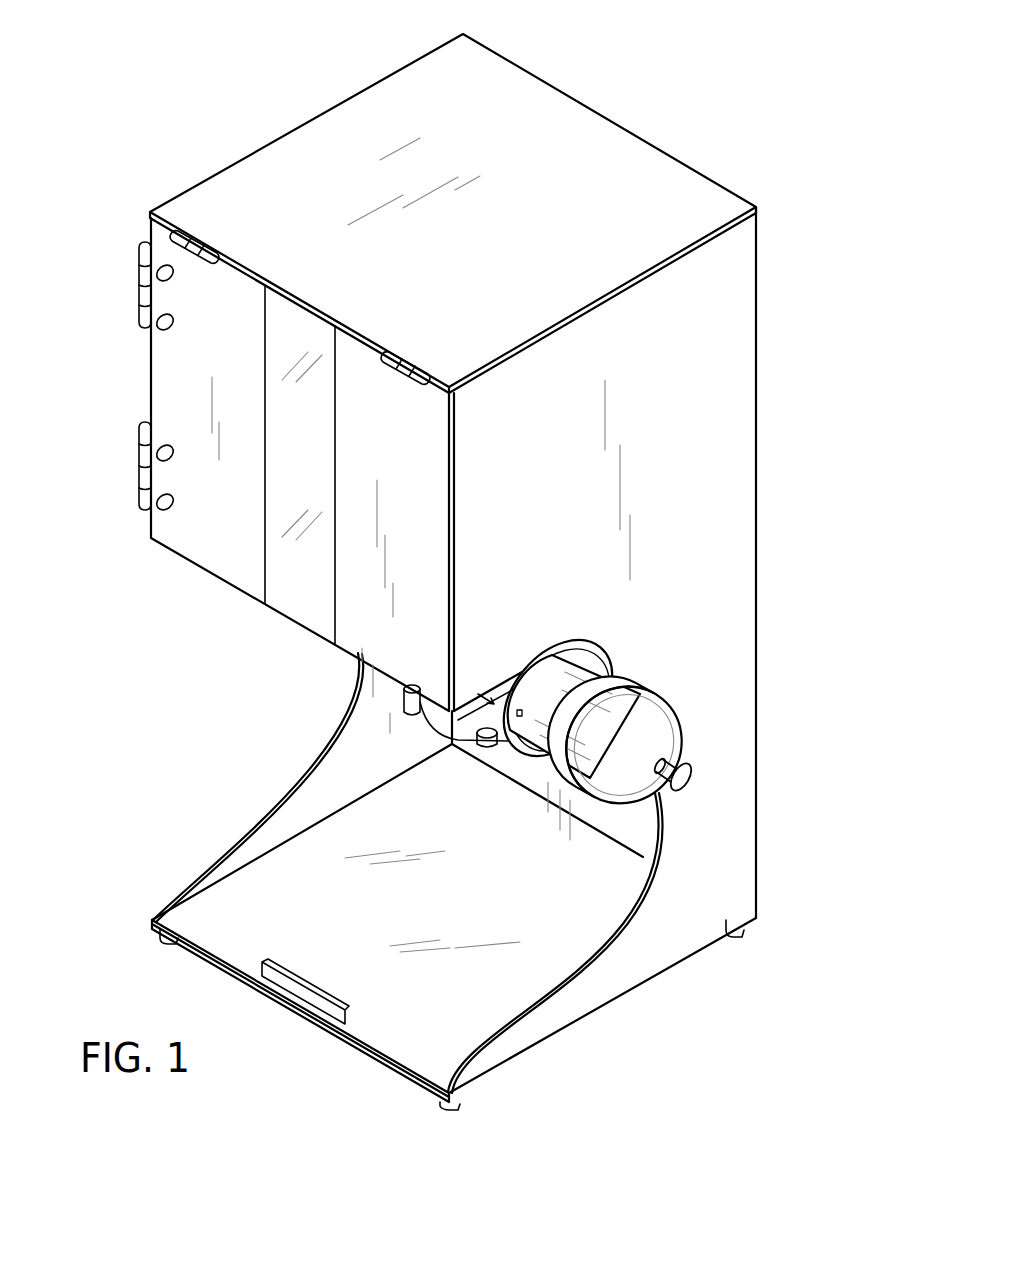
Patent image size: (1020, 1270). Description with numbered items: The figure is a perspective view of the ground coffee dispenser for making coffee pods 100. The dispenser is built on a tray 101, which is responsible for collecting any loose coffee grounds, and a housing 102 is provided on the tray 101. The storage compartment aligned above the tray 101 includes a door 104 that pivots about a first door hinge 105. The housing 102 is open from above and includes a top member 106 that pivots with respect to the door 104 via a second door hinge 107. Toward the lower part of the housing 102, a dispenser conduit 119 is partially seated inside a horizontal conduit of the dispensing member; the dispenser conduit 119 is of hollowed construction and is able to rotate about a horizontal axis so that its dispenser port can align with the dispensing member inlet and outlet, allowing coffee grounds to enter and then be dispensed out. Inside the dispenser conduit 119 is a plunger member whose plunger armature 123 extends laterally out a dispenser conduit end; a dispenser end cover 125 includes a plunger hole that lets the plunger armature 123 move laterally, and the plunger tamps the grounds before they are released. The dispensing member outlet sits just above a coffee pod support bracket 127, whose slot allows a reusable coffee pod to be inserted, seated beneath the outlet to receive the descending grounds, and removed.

The ground coffee dispenser for making coffee pods 100 is at (718, 90).
The tray 101 is at (223, 913).
The housing 102 is at (725, 537).
The door 104 is at (185, 358).
The first door hinge 105 is at (142, 266).
The top member 106 is at (286, 160).
The second door hinge 107 is at (195, 238).
The dispenser conduit 119 is at (578, 686).
The plunger armature 123 is at (672, 768).
The dispenser end cover 125 is at (637, 703).
The coffee pod support bracket 127 is at (487, 757).